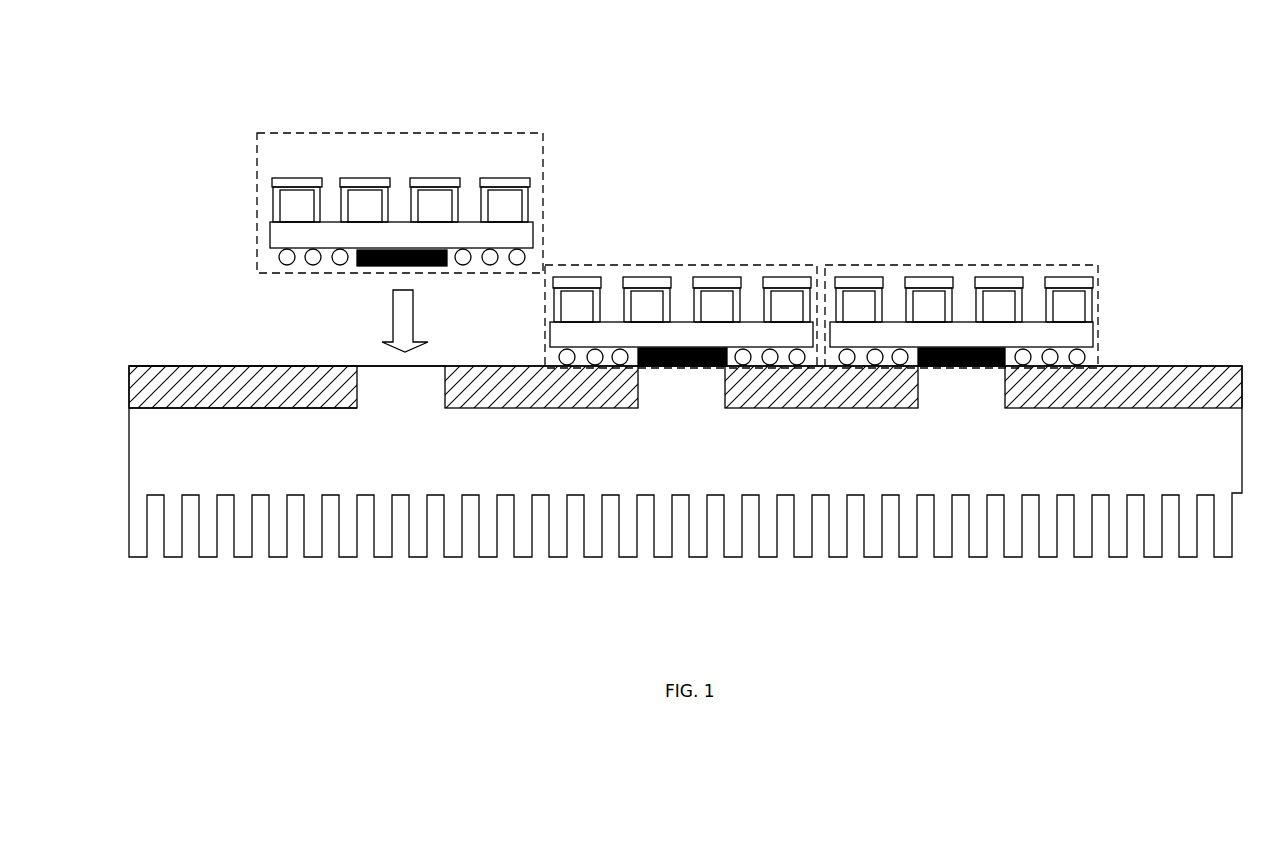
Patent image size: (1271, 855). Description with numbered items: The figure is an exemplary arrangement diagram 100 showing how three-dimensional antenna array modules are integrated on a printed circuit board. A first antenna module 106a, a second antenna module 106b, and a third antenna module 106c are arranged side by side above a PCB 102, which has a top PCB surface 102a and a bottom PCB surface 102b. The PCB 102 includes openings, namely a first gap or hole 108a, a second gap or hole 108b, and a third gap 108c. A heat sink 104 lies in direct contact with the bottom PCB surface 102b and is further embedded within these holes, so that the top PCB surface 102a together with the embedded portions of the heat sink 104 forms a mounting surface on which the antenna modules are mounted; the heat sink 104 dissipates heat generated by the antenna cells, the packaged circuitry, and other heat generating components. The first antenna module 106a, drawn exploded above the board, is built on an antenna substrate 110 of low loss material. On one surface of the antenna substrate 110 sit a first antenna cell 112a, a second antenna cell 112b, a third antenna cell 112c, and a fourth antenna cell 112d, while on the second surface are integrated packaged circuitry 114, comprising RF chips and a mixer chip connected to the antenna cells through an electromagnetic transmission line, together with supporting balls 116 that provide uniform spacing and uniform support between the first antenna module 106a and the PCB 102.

The exemplary arrangement diagram 100 is at (1000, 100).
The PCB 102 is at (685, 387).
The top PCB surface 102a is at (155, 366).
The bottom PCB surface 102b is at (182, 408).
The heat sink 104 is at (685, 461).
The first antenna module 106a is at (368, 133).
The second antenna module 106b is at (642, 265).
The third antenna module 106c is at (905, 265).
The first gap or hole 108a is at (445, 390).
The second gap or hole 108b is at (725, 390).
The third gap 108c is at (1005, 390).
The antenna substrate 110 is at (401, 235).
The first antenna cell 112a is at (276, 178).
The second antenna cell 112b is at (346, 178).
The third antenna cell 112c is at (415, 178).
The fourth antenna cell 112d is at (484, 178).
The packaged circuitry 114 is at (437, 266).
The supporting balls 116 is at (290, 265).